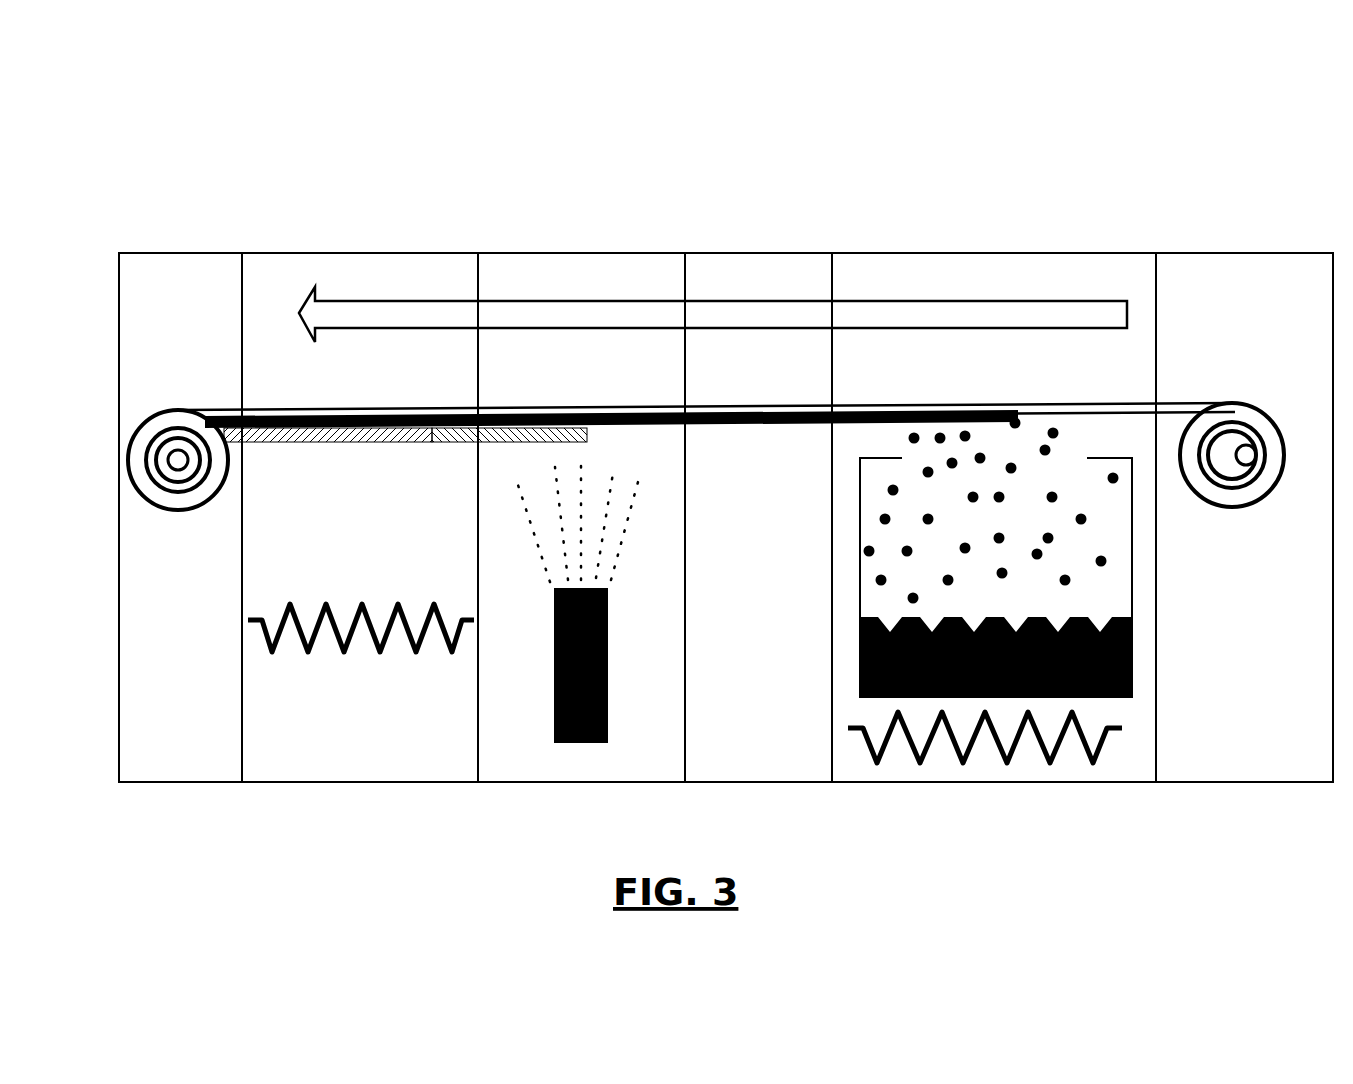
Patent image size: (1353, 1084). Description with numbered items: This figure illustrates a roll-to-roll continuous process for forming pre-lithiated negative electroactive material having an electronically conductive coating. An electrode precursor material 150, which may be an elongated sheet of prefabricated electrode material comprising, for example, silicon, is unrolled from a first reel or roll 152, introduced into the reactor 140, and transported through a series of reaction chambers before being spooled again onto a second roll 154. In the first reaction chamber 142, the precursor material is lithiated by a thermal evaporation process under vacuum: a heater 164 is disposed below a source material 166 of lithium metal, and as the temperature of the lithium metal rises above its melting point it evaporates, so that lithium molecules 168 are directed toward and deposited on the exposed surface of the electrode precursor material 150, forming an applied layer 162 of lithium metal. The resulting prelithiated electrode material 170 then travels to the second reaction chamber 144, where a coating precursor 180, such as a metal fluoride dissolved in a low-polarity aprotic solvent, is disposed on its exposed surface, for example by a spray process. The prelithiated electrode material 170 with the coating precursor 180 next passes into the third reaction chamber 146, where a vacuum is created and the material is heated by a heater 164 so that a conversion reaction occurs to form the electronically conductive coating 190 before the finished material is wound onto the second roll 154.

The reactor 140 is at (206, 143).
The first reaction chamber 142 is at (1015, 253).
The second reaction chamber 144 is at (583, 253).
The third reaction chamber 146 is at (382, 253).
The electrode precursor material 150 is at (1160, 404).
The first reel or roll 152 is at (1246, 447).
The second roll 154 is at (178, 460).
The applied layer 162 is at (842, 425).
The heater 164 is at (412, 657).
The source material 166 is at (858, 652).
The lithium molecules 168 is at (1052, 497).
The prelithiated electrode material 170 is at (707, 388).
The coating precursor 180 is at (510, 445).
The electronically conductive coating 190 is at (300, 443).